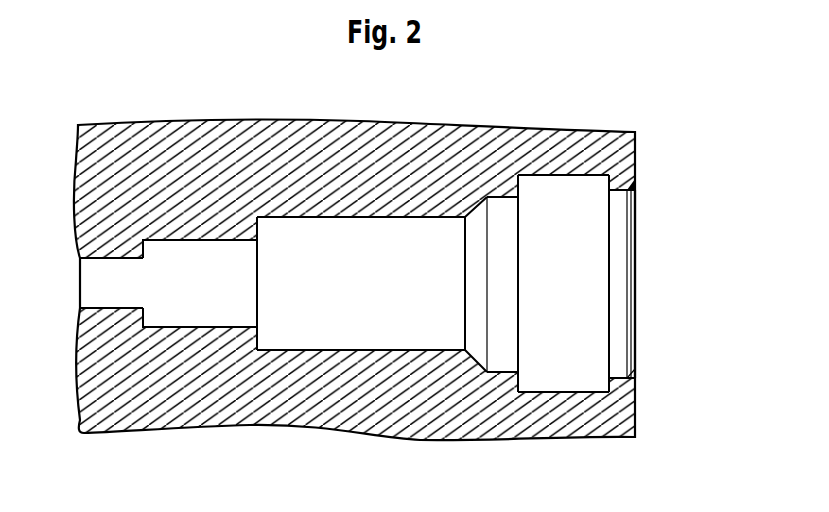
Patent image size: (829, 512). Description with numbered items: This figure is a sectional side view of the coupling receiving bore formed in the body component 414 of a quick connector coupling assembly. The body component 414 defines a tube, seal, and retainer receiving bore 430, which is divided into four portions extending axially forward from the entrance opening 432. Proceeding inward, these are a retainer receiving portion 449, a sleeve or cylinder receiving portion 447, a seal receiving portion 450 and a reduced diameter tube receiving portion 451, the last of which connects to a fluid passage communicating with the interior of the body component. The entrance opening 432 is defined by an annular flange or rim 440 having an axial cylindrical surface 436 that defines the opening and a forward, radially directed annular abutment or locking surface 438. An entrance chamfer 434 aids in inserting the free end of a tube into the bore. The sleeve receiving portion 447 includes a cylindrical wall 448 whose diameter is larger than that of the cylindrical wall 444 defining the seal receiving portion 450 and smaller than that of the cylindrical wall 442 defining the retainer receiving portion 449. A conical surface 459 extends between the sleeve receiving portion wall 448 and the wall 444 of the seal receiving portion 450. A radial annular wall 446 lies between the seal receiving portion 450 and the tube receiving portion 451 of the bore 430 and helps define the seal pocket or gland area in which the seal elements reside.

The body component 414 is at (350, 436).
The reduced diameter tube receiving portion 451 is at (219, 289).
The seal receiving portion 450 is at (385, 289).
The retainer receiving portion 449 is at (578, 289).
The cylindrical wall 444 is at (332, 224).
The radial annular wall 446 is at (277, 338).
The conical surface 459 is at (473, 224).
The cylindrical wall 448 is at (511, 206).
The sleeve or cylinder receiving portion 447 is at (500, 341).
The cylindrical wall 442 is at (575, 186).
The locking surface 438 is at (594, 383).
The annular flange or rim 440 is at (617, 192).
The entrance chamfer 434 is at (637, 187).
The axial cylindrical surface 436 is at (614, 376).
The tube, seal, and retainer receiving bore 430 is at (637, 300).
The entrance opening 432 is at (637, 350).